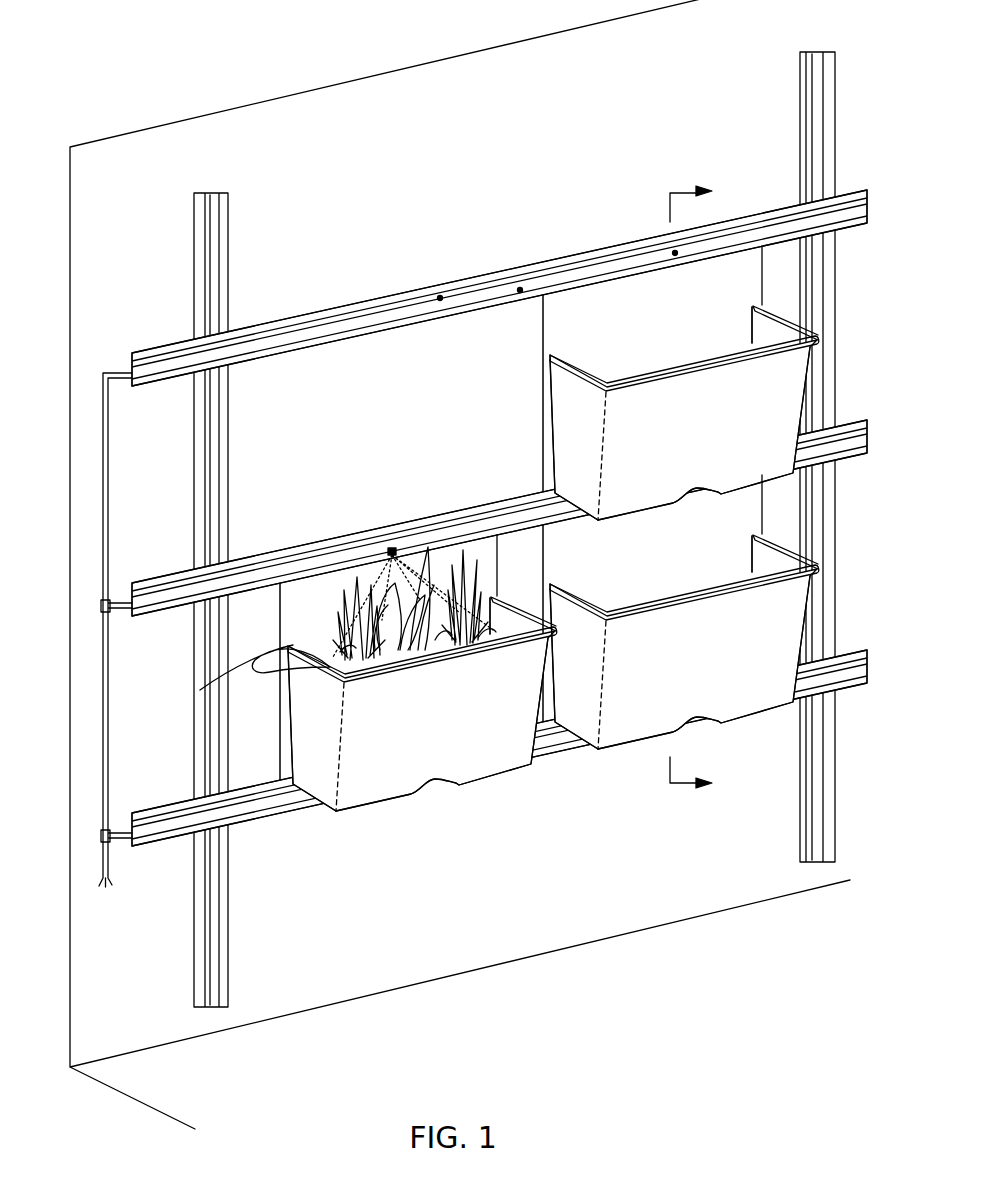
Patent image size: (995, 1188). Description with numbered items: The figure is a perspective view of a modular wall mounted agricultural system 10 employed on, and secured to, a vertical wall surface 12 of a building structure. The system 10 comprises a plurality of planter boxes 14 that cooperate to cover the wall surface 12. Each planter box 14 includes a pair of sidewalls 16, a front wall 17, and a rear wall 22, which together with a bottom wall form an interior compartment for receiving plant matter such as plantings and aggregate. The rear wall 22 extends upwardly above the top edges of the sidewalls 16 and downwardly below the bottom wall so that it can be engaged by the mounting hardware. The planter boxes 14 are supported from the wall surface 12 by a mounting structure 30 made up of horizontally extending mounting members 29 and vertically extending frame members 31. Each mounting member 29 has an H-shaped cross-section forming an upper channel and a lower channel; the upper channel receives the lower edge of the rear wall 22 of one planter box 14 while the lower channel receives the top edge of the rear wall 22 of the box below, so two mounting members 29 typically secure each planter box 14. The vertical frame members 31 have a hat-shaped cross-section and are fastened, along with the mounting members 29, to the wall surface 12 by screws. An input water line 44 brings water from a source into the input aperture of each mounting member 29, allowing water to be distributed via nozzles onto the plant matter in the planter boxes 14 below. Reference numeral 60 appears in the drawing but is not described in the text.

The modular wall mounted agricultural system 10 is at (457, 564).
The vertical wall surface 12 is at (293, 223).
The planter box 14 is at (549, 528).
The sidewall 16 is at (564, 453).
The front wall 17 is at (691, 457).
The rear wall 22 is at (633, 343).
The mounting member 29 is at (274, 324).
The mounting structure 30 is at (490, 529).
The vertical frame member 31 is at (193, 280).
The input water line 44 is at (102, 506).
The irrigation emitter 60 is at (520, 289).